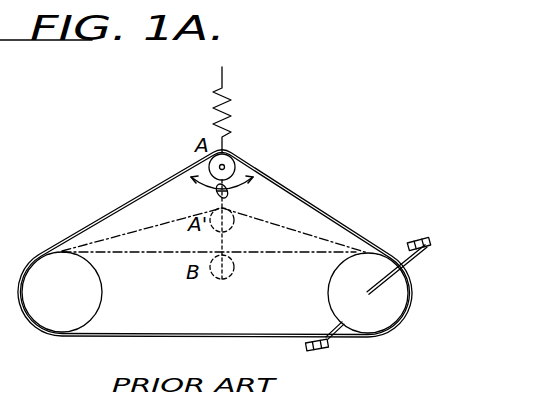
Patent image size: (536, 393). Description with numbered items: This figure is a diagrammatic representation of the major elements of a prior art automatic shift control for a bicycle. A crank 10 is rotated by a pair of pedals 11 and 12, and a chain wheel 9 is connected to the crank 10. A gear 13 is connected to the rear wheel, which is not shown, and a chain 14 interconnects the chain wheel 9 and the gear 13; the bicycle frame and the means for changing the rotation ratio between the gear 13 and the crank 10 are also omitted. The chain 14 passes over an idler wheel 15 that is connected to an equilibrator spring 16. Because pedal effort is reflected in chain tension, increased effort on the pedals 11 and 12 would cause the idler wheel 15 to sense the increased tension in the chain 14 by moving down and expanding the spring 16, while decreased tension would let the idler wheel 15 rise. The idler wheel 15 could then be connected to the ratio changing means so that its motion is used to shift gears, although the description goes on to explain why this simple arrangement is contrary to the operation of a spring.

The chain wheel 9 is at (388, 316).
The crank 10 is at (386, 278).
The pedal 11 is at (432, 240).
The pedal 12 is at (326, 349).
The gear 13 is at (85, 305).
The chain 14 is at (301, 207).
The idler wheel 15 is at (228, 167).
The equilibrator spring 16 is at (230, 108).